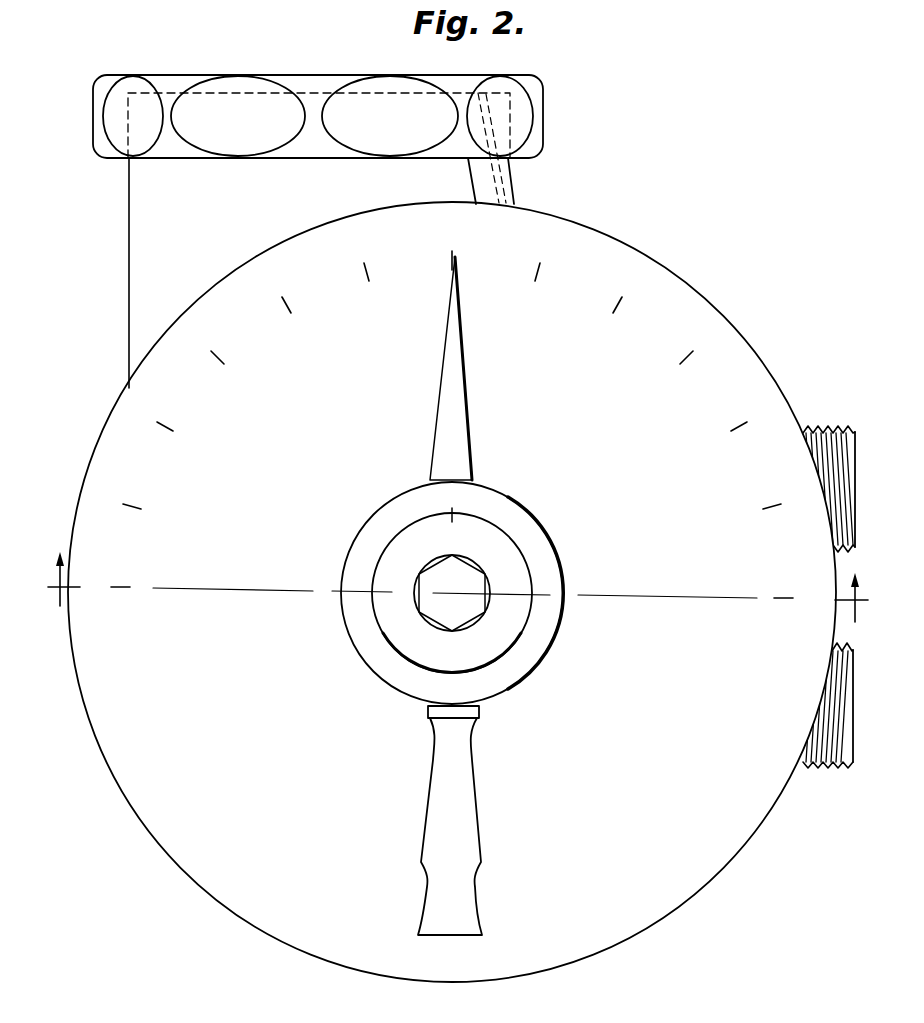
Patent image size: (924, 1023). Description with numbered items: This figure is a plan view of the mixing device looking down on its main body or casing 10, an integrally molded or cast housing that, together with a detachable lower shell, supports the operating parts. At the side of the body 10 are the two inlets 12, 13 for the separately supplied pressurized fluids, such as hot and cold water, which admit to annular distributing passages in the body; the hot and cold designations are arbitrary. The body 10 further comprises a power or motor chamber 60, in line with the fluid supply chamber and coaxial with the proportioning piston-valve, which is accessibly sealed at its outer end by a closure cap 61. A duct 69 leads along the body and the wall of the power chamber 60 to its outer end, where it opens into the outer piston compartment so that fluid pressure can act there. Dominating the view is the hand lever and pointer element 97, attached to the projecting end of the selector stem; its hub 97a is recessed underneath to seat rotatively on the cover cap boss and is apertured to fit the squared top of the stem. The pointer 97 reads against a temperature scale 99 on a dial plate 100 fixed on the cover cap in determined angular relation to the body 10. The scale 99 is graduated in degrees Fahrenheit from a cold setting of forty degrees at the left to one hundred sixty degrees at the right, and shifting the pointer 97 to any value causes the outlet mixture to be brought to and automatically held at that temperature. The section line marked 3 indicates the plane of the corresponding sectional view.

The main body or casing 10 is at (452, 592).
The inlet 12 is at (826, 428).
The inlet 13 is at (818, 764).
The power or motor chamber 60 is at (130, 202).
The closure cap 61 is at (543, 103).
The duct 69 is at (513, 172).
The hand lever and pointer element 97 is at (460, 401).
The hub 97a is at (452, 591).
The temperature scale 99 is at (218, 362).
The dial plate 100 is at (661, 268).
The section line 3- 3 is at (458, 600).